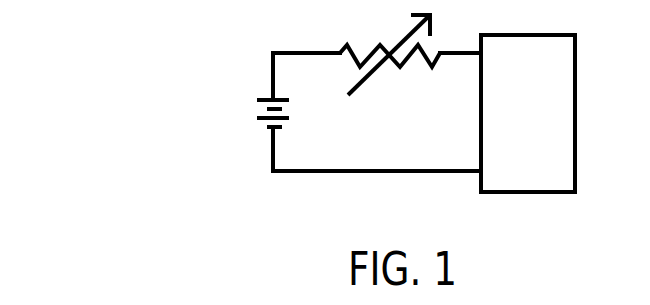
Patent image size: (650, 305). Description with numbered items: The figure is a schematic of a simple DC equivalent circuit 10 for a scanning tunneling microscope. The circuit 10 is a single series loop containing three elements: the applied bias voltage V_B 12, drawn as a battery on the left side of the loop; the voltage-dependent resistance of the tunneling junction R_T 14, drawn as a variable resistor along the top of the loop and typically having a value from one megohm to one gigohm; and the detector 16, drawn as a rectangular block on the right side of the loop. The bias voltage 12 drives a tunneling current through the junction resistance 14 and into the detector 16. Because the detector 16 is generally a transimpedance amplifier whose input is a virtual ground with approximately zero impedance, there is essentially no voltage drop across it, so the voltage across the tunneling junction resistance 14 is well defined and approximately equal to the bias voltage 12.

The DC equivalent circuit 10 is at (158, 122).
The applied bias voltage 12 is at (255, 118).
The voltage-dependent resistance of the tunneling junction 14 is at (390, 49).
The detector 16 is at (538, 144).